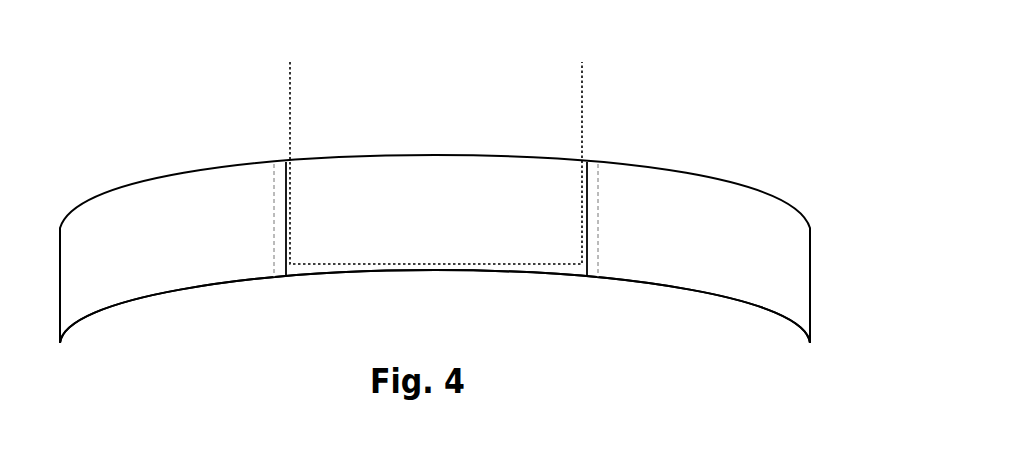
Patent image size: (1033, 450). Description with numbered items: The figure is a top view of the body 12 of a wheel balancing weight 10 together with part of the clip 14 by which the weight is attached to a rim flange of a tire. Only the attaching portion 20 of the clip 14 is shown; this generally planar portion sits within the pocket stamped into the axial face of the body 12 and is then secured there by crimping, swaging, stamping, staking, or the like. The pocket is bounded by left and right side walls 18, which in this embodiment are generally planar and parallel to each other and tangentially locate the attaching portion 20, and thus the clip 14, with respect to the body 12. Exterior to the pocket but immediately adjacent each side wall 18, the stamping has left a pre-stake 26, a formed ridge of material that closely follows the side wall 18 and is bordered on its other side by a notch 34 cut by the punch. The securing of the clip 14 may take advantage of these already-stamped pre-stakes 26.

The wheel balancing weight 10 is at (137, 115).
The body 12 is at (132, 282).
The clip 14 is at (598, 113).
The side wall 18 is at (288, 173).
The attaching portion 20 is at (449, 150).
The pre-stake 26 is at (283, 180).
The notch 34 is at (277, 198).